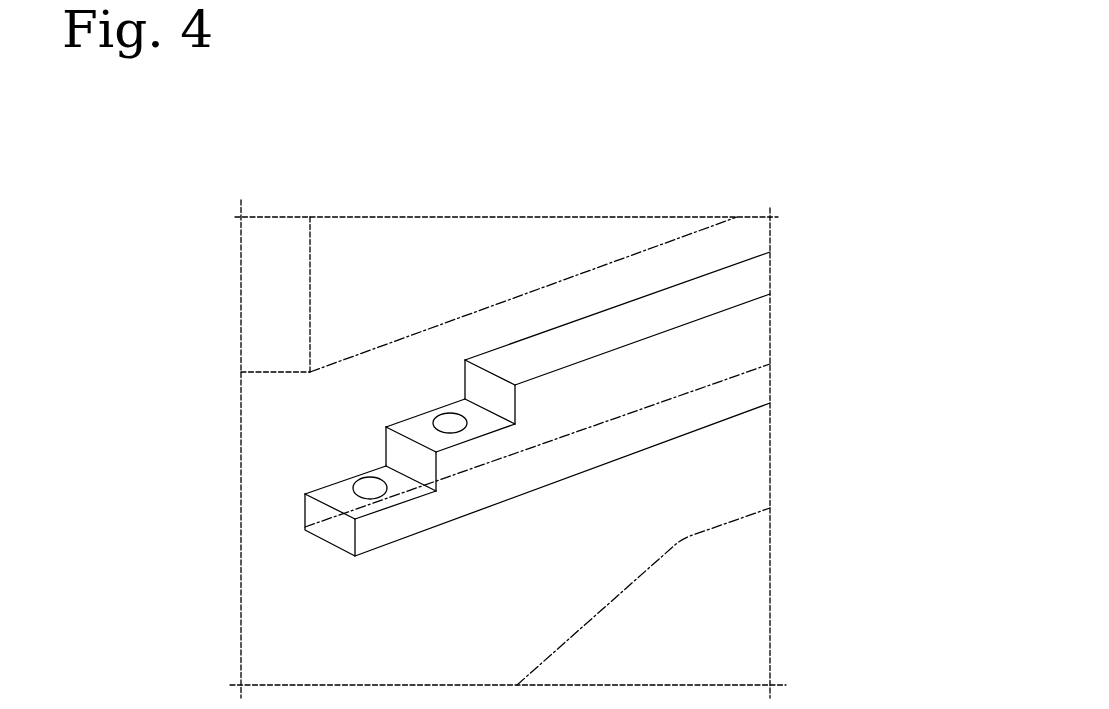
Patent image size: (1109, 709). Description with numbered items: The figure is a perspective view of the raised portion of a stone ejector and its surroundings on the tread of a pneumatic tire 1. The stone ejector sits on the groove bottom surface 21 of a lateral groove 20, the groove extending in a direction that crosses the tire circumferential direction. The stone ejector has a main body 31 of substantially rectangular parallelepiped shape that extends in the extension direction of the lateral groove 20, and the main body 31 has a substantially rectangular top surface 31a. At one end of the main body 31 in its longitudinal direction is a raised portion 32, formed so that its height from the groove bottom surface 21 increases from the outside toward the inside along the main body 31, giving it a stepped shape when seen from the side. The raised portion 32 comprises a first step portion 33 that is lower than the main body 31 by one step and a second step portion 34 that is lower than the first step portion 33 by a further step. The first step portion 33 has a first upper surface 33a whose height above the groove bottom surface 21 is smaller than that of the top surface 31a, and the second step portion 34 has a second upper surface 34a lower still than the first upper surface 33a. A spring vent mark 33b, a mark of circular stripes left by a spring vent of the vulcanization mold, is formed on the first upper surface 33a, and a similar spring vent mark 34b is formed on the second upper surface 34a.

The pneumatic tire 1 is at (746, 204).
The lateral groove 20 is at (750, 418).
The groove bottom surface 21 is at (752, 463).
The main body 31 is at (617, 322).
The top surface 31a is at (633, 313).
The raised portion 32 is at (413, 367).
The first step portion 33 is at (447, 402).
The first upper surface 33a is at (470, 398).
The spring vent mark 33b is at (447, 418).
The second step portion 34 is at (354, 462).
The second upper surface 34a is at (322, 490).
The spring vent mark 34b is at (363, 488).